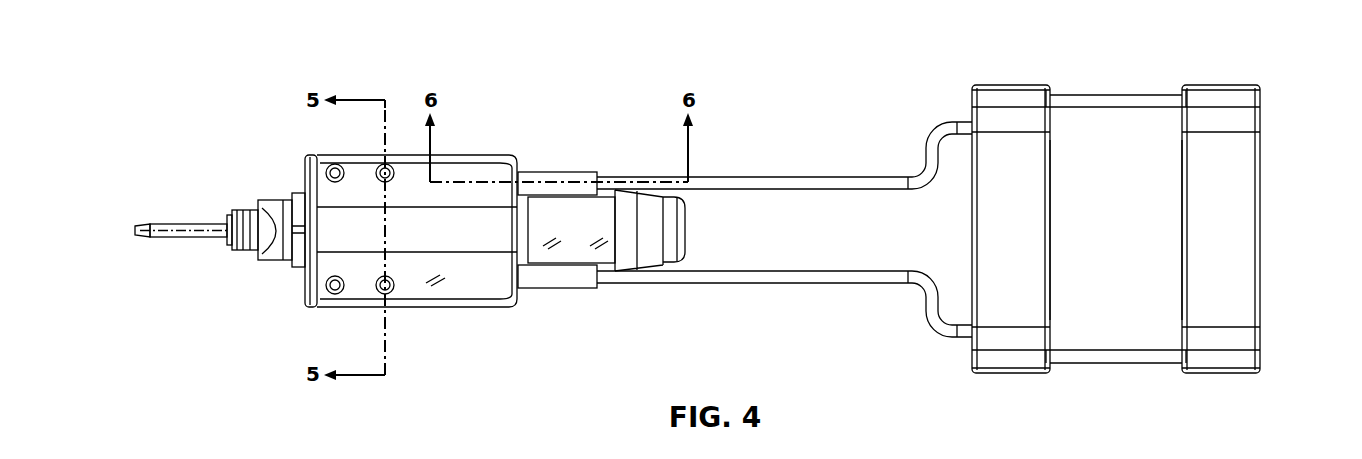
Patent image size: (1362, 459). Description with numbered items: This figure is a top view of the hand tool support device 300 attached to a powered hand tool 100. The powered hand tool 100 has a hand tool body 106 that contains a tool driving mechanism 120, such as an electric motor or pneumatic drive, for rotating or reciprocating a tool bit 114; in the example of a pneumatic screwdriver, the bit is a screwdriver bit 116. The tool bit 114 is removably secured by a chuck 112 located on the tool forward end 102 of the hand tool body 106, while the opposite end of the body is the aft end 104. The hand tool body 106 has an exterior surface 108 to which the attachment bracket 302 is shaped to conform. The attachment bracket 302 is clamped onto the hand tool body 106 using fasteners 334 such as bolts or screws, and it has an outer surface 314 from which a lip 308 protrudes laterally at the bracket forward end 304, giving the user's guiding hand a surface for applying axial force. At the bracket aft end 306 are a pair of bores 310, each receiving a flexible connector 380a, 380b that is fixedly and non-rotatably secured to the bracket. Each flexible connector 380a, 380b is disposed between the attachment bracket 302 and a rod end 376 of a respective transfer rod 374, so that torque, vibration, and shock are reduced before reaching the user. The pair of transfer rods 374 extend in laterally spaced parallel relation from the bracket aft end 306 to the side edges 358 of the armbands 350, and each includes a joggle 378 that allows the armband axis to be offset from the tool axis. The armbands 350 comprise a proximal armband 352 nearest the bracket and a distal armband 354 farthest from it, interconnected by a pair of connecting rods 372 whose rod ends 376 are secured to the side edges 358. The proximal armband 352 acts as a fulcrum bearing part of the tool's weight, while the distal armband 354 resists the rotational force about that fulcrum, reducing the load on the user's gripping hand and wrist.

The powered hand tool 100 is at (451, 257).
The tool forward end 102 is at (234, 261).
The aft end 104 is at (688, 244).
The hand tool body 106 is at (648, 247).
The exterior surface 108 is at (599, 248).
The chuck 112 is at (235, 209).
The tool bit 114 is at (168, 240).
The screwdriver bit 116 is at (172, 222).
The tool driving mechanism 120 is at (550, 248).
The hand tool support device 300 is at (926, 225).
The attachment bracket 302 is at (417, 223).
The bracket forward end 304 is at (303, 177).
The bracket aft end 306 is at (535, 250).
The lip 308 is at (312, 306).
The bores 310 is at (526, 166).
The outer surface 314 is at (434, 289).
The fasteners 334 is at (391, 295).
The armbands 350 is at (1153, 229).
The proximal armband 352 is at (1030, 166).
The distal armband 354 is at (1240, 164).
The side edges 358 is at (1052, 262).
The connecting rods 372 is at (1108, 94).
The transfer rods 374 is at (842, 176).
The rod ends 376 is at (970, 122).
The joggle 378 is at (924, 150).
The flexible connector 380a is at (580, 171).
The flexible connector 380b is at (585, 289).